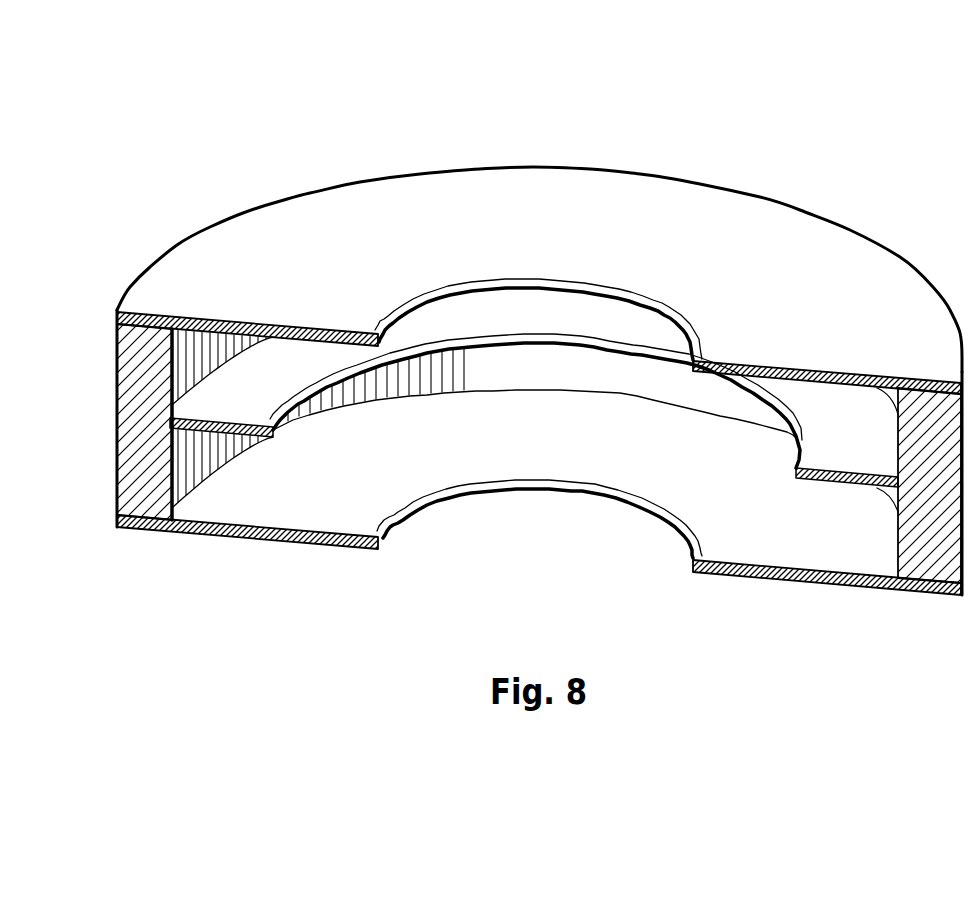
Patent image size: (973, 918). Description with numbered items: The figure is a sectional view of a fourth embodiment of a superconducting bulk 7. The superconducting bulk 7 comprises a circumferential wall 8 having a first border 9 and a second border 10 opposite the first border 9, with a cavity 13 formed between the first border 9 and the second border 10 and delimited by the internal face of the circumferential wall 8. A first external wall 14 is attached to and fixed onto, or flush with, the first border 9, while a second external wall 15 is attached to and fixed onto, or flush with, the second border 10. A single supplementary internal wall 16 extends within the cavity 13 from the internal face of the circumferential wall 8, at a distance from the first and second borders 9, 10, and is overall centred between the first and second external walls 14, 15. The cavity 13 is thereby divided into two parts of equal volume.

The superconducting bulk 7 is at (502, 345).
The circumferential wall 8 is at (145, 395).
The first border 9 is at (150, 320).
The second border 10 is at (143, 522).
The cavity 13 is at (534, 450).
The first external wall 14 is at (812, 255).
The second external wall 15 is at (863, 543).
The internal wall 16 is at (270, 372).